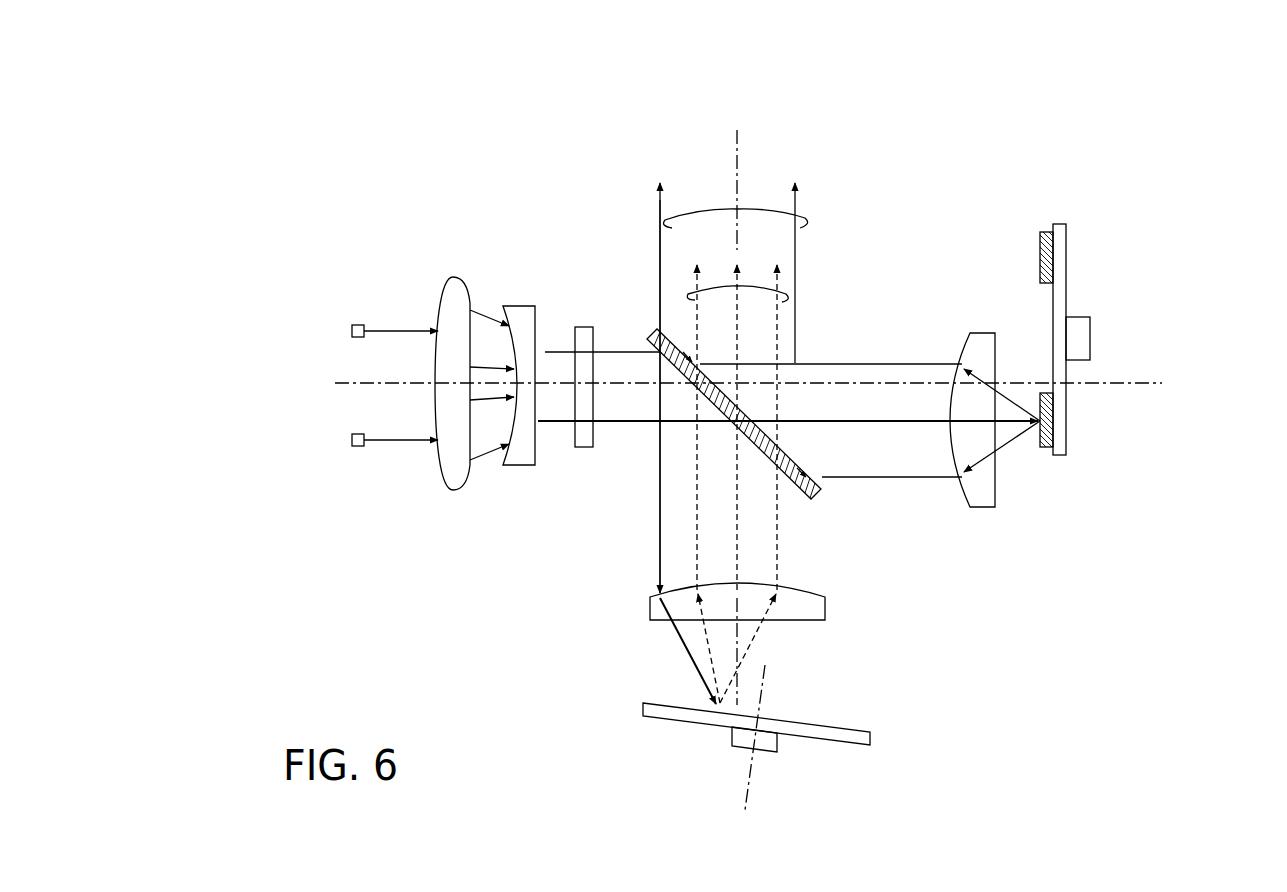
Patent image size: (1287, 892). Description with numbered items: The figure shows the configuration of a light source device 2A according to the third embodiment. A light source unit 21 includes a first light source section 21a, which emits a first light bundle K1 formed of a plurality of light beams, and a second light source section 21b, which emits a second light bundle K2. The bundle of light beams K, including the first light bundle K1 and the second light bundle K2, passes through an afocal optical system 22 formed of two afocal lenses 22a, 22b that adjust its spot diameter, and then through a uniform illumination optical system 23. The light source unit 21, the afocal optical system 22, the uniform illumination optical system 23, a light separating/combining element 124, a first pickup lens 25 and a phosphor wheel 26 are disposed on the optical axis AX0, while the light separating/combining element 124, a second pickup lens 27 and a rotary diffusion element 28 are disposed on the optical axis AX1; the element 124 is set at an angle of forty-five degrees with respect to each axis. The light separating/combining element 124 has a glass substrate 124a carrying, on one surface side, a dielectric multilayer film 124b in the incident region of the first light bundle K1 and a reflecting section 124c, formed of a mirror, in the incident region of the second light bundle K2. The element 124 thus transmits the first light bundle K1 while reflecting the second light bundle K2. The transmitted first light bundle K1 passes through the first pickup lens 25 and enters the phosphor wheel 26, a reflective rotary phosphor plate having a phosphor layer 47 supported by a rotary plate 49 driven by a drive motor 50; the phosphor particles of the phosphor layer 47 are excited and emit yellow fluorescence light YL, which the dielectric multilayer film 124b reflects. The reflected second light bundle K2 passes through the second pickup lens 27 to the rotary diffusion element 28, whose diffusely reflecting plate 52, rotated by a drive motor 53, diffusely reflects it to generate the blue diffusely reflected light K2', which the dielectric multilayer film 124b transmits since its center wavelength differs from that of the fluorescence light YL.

The light source device 2A is at (1222, 182).
The light source unit 21 is at (343, 330).
The first light source section 21a is at (343, 438).
The second light source section 21b is at (343, 327).
The afocal optical system 22 is at (482, 455).
The afocal lens 22a is at (457, 492).
The afocal lens 22b is at (520, 467).
The uniform illumination optical system 23 is at (588, 448).
The light separating/combining element 124 is at (771, 423).
The glass substrate 124a is at (826, 483).
The dielectric multilayer film 124b is at (803, 497).
The reflecting section 124c is at (652, 338).
The first pickup lens 25 is at (982, 508).
The phosphor wheel 26 is at (1080, 329).
The phosphor layer 47 is at (1047, 450).
The rotary plate 49 is at (1058, 248).
The drive motor 50 is at (1083, 325).
The second pickup lens 27 is at (650, 612).
The rotary diffusion element 28 is at (792, 753).
The diffusely reflecting plate 52 is at (650, 712).
The drive motor 53 is at (770, 745).
The bundle of light beams K is at (410, 445).
The first light bundle K1 is at (375, 450).
The second light bundle K2 is at (578, 443).
The diffusely reflected light K2' is at (775, 484).
The fluorescence light YL is at (808, 218).
The optical axis AX0 is at (1140, 386).
The optical axis AX1 is at (740, 148).